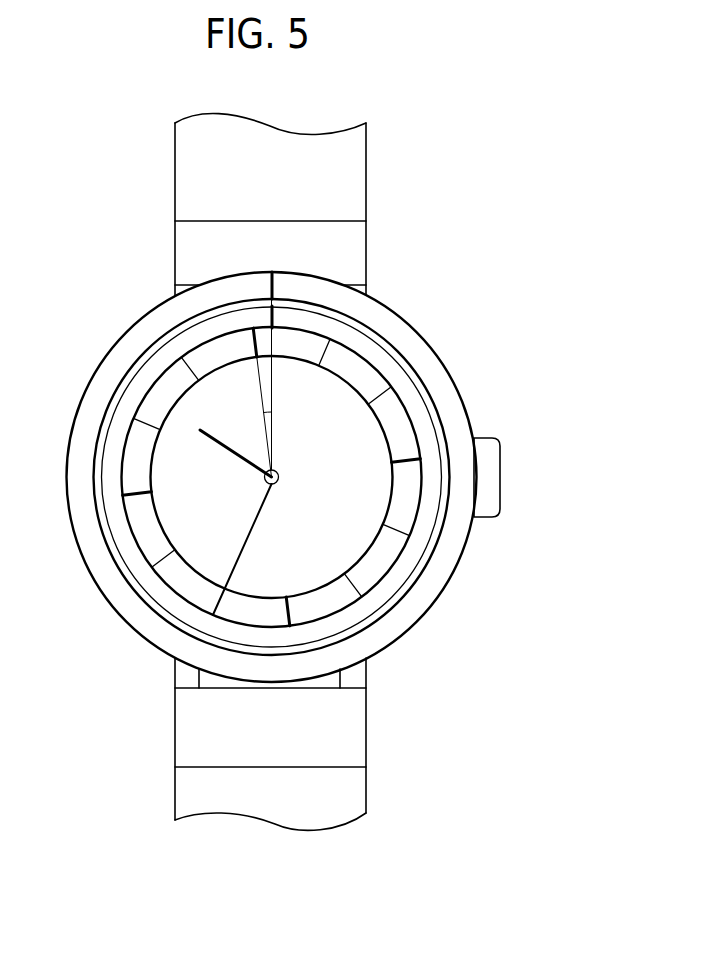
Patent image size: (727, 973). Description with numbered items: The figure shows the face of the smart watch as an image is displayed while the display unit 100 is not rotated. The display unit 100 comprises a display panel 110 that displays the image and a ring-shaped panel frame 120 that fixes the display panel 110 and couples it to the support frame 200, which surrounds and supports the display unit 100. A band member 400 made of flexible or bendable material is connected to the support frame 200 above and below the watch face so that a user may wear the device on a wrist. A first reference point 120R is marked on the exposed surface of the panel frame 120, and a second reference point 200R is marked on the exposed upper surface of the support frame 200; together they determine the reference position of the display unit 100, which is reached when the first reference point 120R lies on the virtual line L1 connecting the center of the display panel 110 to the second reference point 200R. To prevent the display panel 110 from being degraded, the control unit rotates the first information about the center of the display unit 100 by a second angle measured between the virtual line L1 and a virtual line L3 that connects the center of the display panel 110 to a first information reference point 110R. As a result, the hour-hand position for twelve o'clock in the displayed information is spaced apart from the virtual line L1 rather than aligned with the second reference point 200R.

The display unit 100 is at (558, 308).
The display panel 110 is at (343, 398).
The panel frame 120 is at (417, 403).
The support frame 200 is at (433, 584).
The band member 400 is at (350, 188).
The second reference point 200R is at (270, 288).
The first reference point 120R is at (269, 313).
The first information reference point 110R is at (254, 342).
The virtual line L1 is at (285, 371).
The virtual line L3 is at (236, 450).